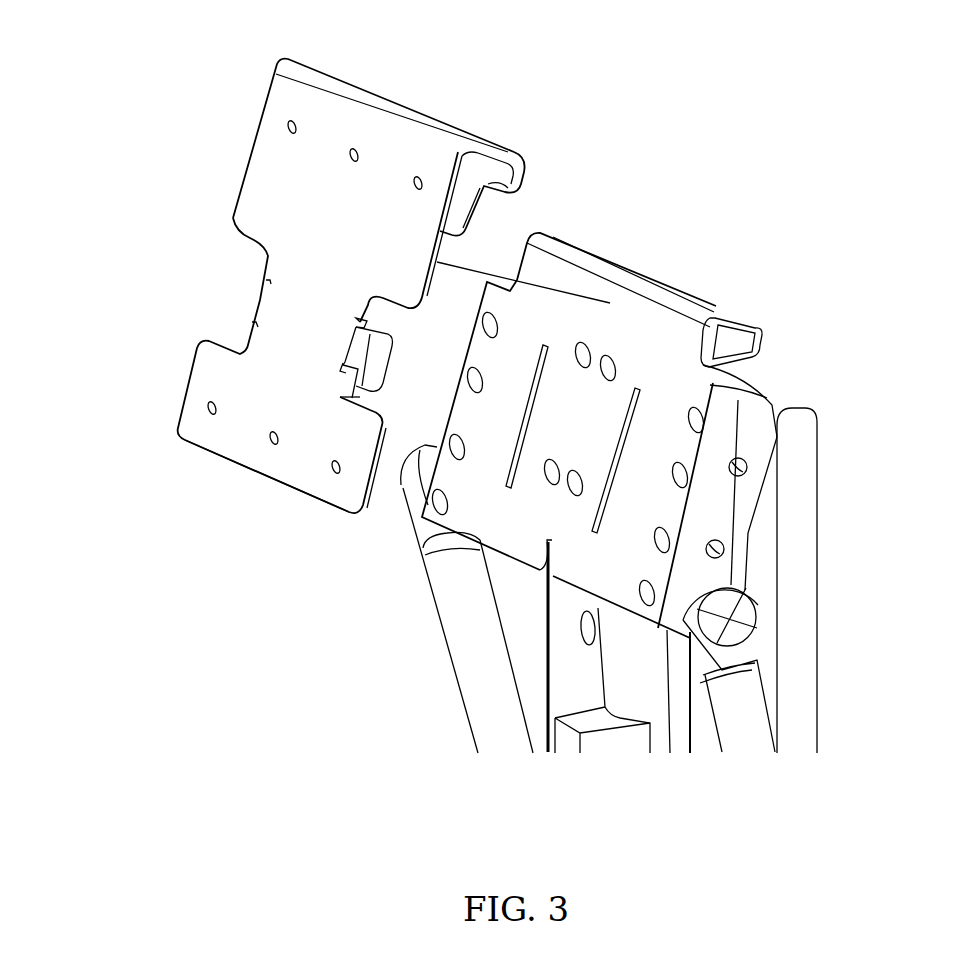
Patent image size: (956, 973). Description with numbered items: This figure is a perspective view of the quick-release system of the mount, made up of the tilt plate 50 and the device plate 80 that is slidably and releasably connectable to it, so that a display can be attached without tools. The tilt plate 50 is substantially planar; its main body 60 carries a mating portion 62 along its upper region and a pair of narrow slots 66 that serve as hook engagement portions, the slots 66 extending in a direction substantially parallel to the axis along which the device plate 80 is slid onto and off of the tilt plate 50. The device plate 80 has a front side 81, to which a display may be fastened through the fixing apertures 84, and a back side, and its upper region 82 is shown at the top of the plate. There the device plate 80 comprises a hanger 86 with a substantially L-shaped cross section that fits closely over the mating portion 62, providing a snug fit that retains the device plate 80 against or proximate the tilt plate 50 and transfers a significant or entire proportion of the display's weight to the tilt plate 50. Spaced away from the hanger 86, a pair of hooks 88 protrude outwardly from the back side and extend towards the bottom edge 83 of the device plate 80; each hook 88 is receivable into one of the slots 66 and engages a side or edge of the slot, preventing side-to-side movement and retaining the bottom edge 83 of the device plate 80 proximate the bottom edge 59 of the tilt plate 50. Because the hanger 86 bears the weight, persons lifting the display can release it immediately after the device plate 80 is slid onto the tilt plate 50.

The tilt plate 50 is at (628, 437).
The bottom edge of tilt plate 59 is at (513, 563).
The mounting bracket 60 is at (653, 305).
The mating portion 62 is at (767, 342).
The slots 66 is at (535, 412).
The device plate 80 is at (341, 304).
The front side 81 is at (277, 187).
The top flange 82 is at (354, 120).
The bottom edge of device plate 83 is at (312, 500).
The fixing apertures 84 is at (203, 407).
The hanger 86 is at (518, 192).
The hooks 88 is at (387, 370).